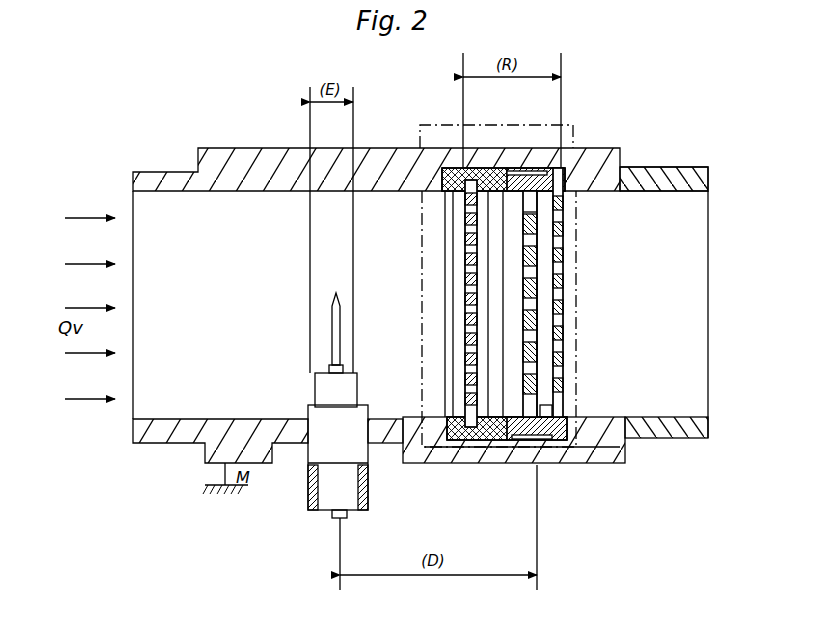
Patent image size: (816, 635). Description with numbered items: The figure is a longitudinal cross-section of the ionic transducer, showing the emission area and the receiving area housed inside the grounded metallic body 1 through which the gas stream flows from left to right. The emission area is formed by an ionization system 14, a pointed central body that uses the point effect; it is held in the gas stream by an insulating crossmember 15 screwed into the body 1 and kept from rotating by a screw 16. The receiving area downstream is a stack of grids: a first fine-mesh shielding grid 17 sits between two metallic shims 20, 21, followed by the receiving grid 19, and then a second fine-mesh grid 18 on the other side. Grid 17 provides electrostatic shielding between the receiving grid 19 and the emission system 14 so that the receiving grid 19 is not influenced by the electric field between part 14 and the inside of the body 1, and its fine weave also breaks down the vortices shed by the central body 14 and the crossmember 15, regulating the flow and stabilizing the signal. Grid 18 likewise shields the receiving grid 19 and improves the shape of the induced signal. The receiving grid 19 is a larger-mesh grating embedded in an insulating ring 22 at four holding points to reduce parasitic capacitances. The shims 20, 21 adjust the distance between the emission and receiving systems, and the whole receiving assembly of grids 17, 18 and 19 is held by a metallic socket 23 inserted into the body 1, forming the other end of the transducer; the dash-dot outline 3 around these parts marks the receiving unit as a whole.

The metallic body 1 is at (608, 147).
The air flow sensing unit 3 is at (573, 125).
The ionization system 14 is at (323, 323).
The insulating crossmember 15 is at (325, 487).
The screw 16 is at (387, 447).
The grid 17 is at (473, 448).
The grid 18 is at (563, 462).
The receiving grid 19 is at (543, 460).
The metallic shim 20 is at (445, 448).
The metallic shim 21 is at (495, 448).
The insulating ring 22 is at (547, 410).
The metallic socket 23 is at (675, 443).